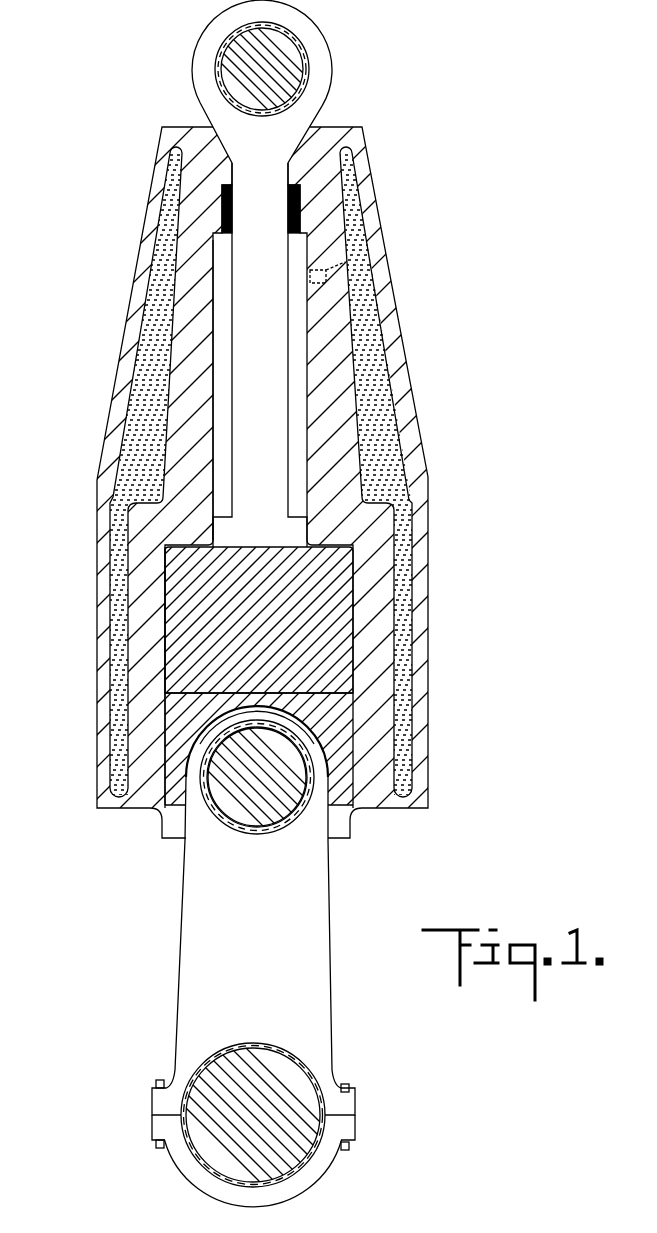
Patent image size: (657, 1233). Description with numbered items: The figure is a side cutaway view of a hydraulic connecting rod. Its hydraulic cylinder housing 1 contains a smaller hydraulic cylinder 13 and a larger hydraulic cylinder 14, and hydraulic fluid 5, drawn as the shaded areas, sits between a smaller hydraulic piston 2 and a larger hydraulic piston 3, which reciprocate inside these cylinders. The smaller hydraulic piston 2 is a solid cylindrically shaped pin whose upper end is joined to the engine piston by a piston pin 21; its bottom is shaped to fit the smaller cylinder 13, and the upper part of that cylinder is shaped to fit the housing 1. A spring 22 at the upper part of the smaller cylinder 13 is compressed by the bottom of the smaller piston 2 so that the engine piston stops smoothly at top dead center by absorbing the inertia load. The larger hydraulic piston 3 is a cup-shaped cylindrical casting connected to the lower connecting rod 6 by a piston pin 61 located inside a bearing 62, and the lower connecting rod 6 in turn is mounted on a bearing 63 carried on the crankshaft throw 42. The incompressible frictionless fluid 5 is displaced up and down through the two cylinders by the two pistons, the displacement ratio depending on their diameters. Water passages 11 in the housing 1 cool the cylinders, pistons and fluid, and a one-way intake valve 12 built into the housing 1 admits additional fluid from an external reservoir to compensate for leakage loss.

The hydraulic cylinder housing 1 is at (352, 134).
The smaller hydraulic piston 2 is at (243, 348).
The larger hydraulic piston 3 is at (168, 760).
The hydraulic fluid 5 is at (335, 597).
The lower connecting rod 6 is at (310, 965).
The water passages 11 is at (140, 442).
The one-way intake valve 12 is at (318, 268).
The smaller hydraulic cylinder 13 is at (210, 389).
The larger hydraulic cylinder 14 is at (165, 615).
The piston pin 21 is at (272, 48).
The spring 22 is at (228, 246).
The crankshaft throw 42 is at (192, 1150).
The piston pin 61 is at (237, 803).
The bearing 62 is at (285, 740).
The bearing 63 is at (317, 1078).